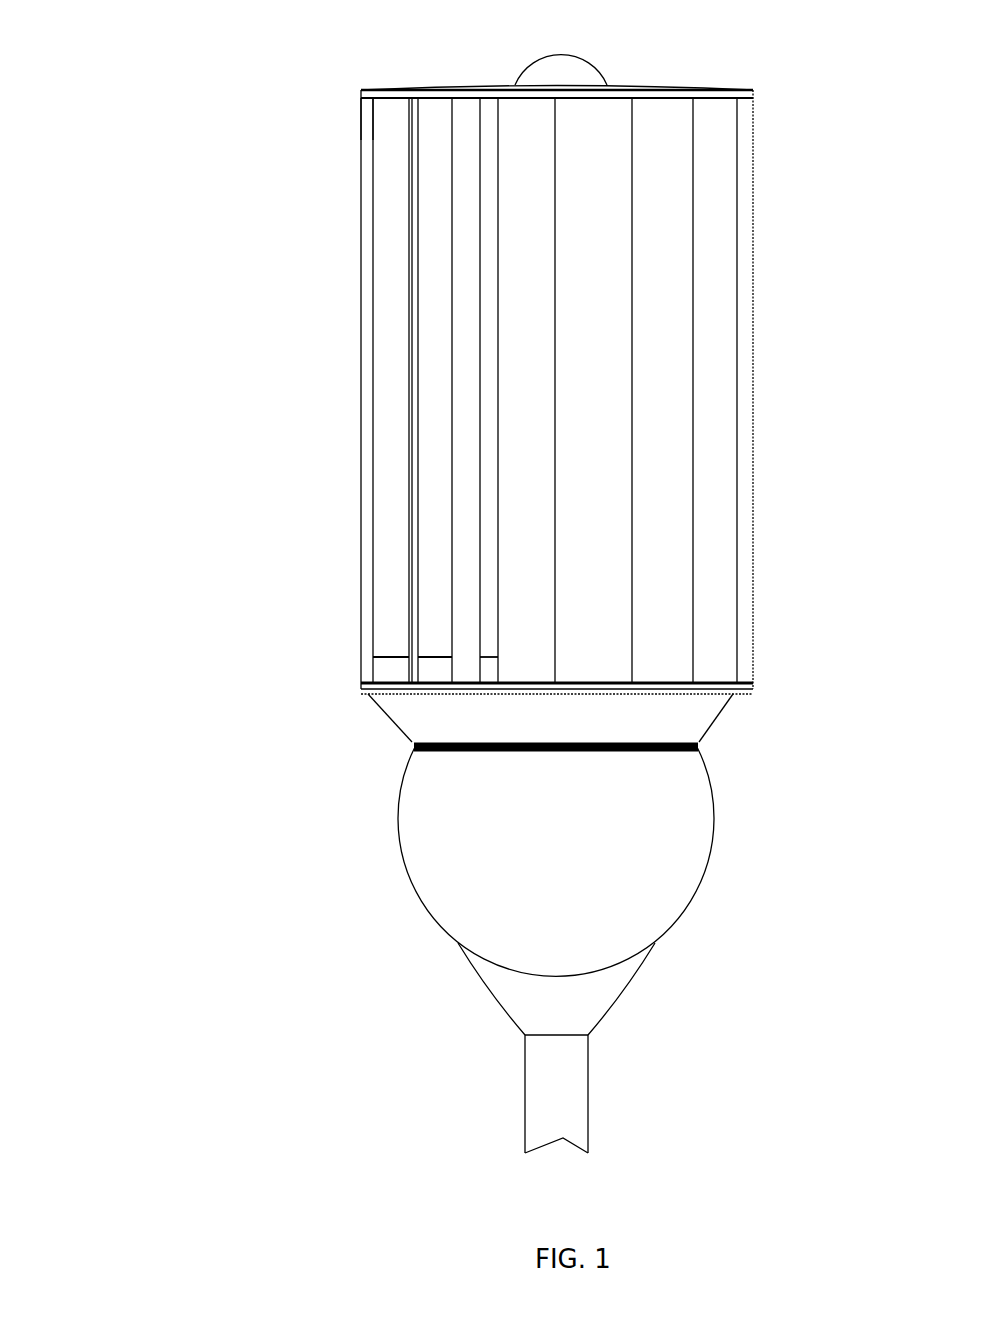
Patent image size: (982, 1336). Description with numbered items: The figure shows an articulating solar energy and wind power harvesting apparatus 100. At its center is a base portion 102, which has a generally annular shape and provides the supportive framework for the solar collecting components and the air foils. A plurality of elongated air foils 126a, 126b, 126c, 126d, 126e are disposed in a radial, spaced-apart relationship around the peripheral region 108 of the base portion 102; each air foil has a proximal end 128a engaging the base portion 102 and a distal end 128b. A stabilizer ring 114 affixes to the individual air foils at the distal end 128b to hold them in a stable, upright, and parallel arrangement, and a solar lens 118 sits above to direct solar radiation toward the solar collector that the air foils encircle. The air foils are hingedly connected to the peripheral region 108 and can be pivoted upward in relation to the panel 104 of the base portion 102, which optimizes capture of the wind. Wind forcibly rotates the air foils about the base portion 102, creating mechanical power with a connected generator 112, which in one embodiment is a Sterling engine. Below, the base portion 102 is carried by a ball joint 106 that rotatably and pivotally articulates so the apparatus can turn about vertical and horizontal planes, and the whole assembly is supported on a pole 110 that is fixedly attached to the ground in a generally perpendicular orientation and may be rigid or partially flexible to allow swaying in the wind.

The apparatus 100 is at (132, 101).
The base portion 102 is at (728, 732).
The panel 104 is at (408, 693).
The ball joint 106 is at (398, 827).
The peripheral region 108 is at (754, 684).
The pole 110 is at (528, 1108).
The generator 112 is at (610, 990).
The stabilizer ring 114 is at (708, 89).
The solar lens 118 is at (573, 53).
The air foil 126a is at (745, 285).
The air foil 126b is at (672, 478).
The air foil 126c is at (526, 523).
The air foil 126d is at (435, 522).
The air foil 126e is at (389, 613).
The proximal end 128a is at (346, 664).
The distal end 128b is at (346, 125).